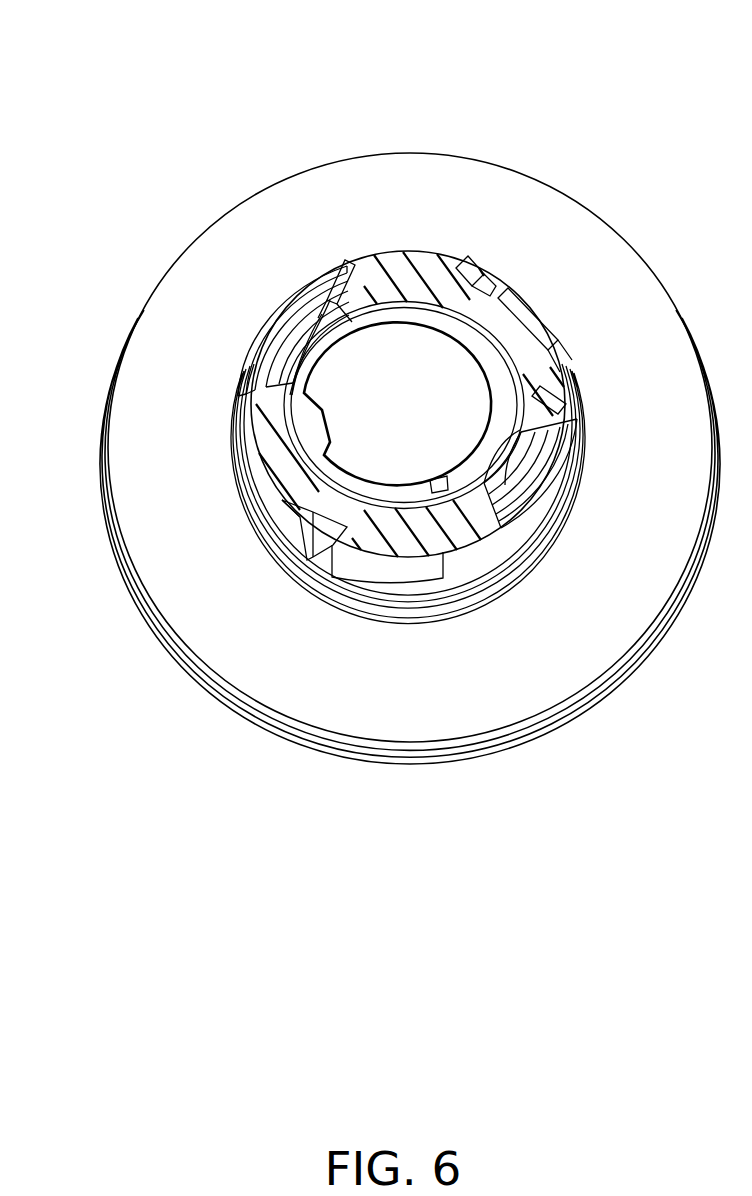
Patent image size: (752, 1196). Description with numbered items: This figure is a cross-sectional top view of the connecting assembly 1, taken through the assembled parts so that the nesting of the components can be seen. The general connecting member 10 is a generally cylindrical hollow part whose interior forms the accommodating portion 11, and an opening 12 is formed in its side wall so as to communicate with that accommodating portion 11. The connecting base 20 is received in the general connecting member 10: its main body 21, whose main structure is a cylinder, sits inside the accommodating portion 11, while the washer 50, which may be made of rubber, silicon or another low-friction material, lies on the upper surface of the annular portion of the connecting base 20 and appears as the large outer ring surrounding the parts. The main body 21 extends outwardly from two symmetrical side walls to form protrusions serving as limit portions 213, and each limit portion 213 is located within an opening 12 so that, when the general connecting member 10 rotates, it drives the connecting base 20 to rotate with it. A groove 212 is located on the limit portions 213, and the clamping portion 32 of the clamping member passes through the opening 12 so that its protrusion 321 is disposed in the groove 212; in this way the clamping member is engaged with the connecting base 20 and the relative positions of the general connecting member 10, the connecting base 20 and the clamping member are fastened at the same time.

The connecting assembly 1 is at (121, 60).
The general connecting member 10 is at (512, 320).
The accommodating portion 11 is at (483, 357).
The opening 12 is at (332, 352).
The connecting base 20 is at (432, 763).
The main body 21 is at (414, 358).
The groove 212 is at (322, 312).
The limit portion 213 is at (321, 330).
The clamping portion 32 is at (278, 372).
The protrusion 321 is at (303, 356).
The washer 50 is at (137, 370).